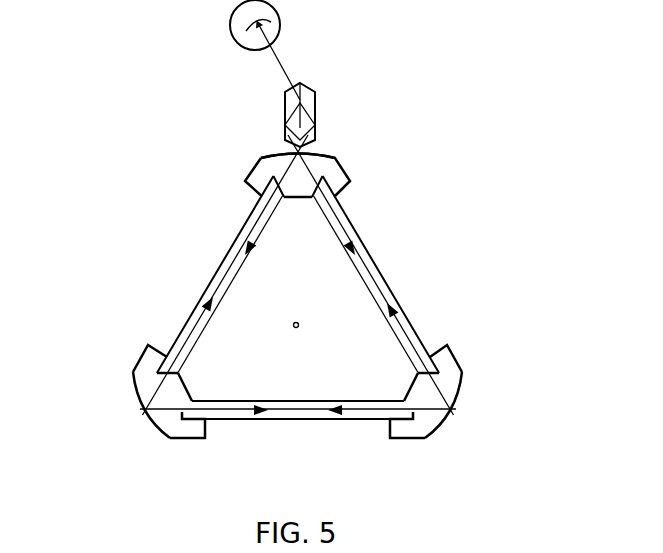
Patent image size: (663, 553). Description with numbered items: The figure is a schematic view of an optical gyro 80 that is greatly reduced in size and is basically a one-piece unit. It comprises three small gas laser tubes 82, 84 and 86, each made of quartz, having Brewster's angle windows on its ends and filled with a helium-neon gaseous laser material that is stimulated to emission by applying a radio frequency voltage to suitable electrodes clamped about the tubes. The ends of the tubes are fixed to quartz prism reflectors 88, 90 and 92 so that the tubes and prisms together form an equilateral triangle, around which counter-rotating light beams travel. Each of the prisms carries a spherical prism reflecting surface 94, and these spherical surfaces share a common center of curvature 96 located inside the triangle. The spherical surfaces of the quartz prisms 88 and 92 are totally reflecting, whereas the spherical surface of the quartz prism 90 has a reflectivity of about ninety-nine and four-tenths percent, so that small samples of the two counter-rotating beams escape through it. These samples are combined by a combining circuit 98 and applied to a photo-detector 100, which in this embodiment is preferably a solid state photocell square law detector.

The optical gyro 80 is at (385, 222).
The gas laser tube 82 is at (210, 283).
The gas laser tube 84 is at (389, 288).
The gas laser tube 86 is at (293, 419).
The quartz prism reflector 88 is at (134, 353).
The quartz prism reflector 90 is at (350, 172).
The quartz prism reflector 92 is at (461, 363).
The spherical prism reflecting surface 94 is at (272, 155).
The common center of curvature 96 is at (299, 325).
The combining circuit 98 is at (316, 92).
The photo-detector 100 is at (281, 23).